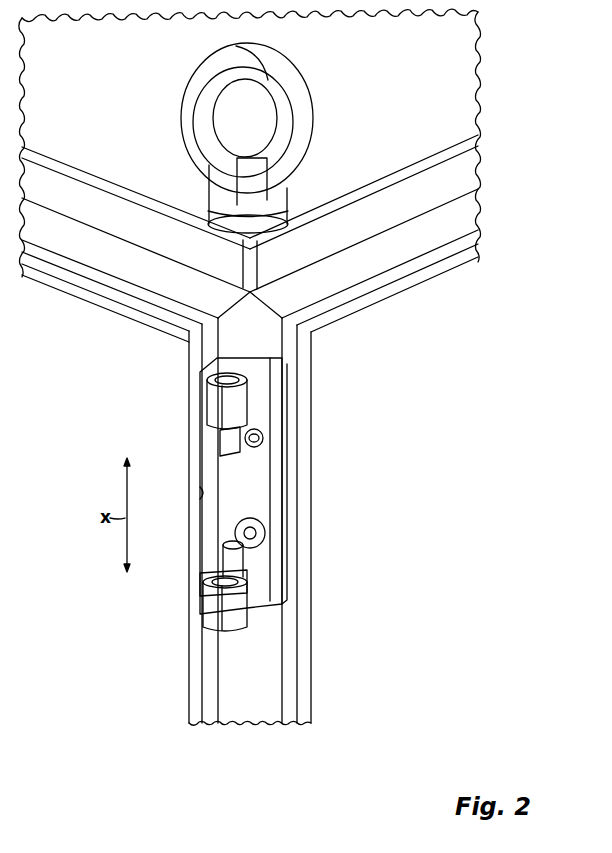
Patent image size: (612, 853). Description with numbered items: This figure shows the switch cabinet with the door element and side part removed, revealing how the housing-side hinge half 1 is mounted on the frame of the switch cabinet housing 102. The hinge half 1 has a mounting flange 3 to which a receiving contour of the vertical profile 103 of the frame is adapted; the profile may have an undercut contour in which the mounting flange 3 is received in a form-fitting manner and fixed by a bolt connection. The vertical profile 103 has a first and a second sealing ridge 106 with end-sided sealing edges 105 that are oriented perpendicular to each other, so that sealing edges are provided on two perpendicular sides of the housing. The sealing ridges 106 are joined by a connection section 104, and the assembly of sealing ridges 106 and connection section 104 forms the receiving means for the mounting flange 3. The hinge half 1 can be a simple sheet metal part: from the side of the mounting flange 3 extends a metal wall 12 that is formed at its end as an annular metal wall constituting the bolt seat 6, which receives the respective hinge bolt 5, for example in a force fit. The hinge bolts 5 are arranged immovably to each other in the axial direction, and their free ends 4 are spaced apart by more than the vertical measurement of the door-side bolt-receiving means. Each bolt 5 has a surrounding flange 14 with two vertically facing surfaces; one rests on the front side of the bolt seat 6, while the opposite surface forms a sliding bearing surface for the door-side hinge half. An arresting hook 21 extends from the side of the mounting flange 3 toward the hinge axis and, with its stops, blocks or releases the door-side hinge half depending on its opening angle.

The switch cabinet housing 102 is at (497, 76).
The vertical profile 103 is at (325, 691).
The connection section 104 is at (252, 706).
The sealing edges 105 is at (189, 713).
The sealing ridge 106 is at (210, 706).
The housing-side hinge half 1 is at (253, 494).
The mounting flange 3 is at (256, 481).
The free ends 4 is at (220, 450).
The hinge bolts 5 is at (257, 448).
The bolt seat 6 is at (240, 406).
The metal wall 12 is at (240, 379).
The flange 14 is at (208, 428).
The arresting hook 21 is at (200, 494).